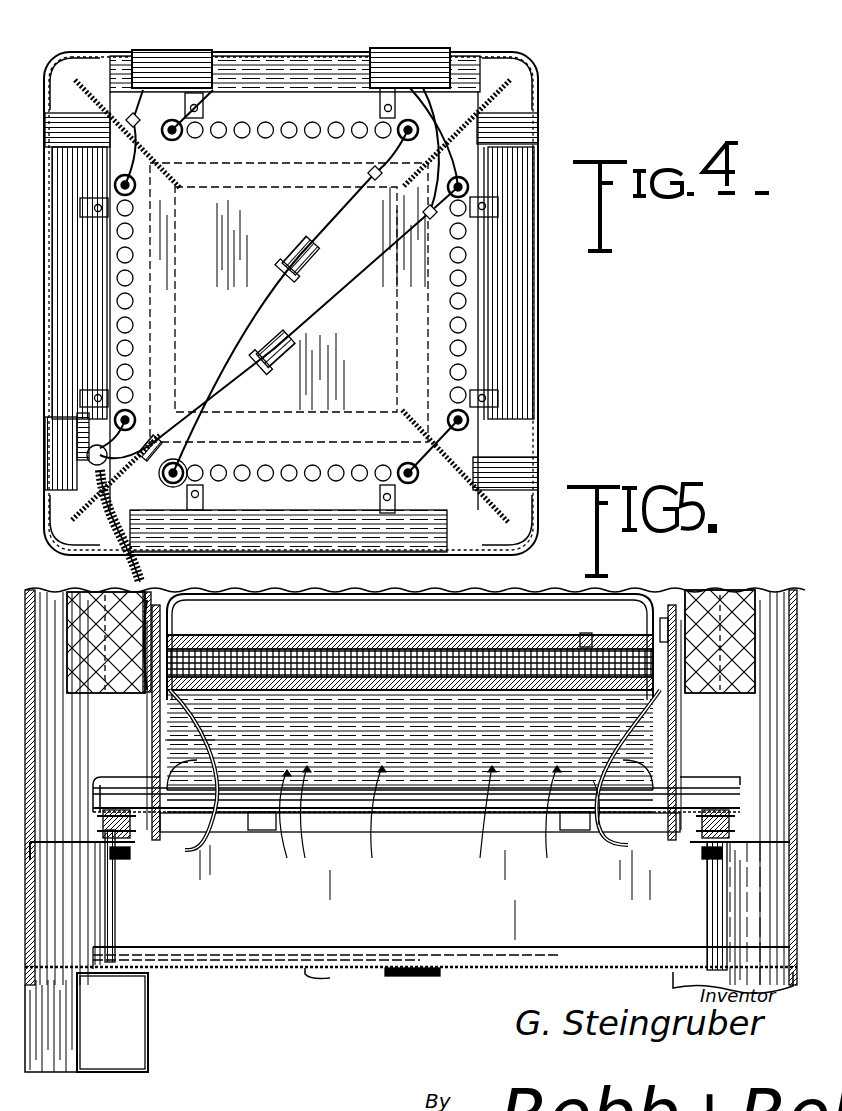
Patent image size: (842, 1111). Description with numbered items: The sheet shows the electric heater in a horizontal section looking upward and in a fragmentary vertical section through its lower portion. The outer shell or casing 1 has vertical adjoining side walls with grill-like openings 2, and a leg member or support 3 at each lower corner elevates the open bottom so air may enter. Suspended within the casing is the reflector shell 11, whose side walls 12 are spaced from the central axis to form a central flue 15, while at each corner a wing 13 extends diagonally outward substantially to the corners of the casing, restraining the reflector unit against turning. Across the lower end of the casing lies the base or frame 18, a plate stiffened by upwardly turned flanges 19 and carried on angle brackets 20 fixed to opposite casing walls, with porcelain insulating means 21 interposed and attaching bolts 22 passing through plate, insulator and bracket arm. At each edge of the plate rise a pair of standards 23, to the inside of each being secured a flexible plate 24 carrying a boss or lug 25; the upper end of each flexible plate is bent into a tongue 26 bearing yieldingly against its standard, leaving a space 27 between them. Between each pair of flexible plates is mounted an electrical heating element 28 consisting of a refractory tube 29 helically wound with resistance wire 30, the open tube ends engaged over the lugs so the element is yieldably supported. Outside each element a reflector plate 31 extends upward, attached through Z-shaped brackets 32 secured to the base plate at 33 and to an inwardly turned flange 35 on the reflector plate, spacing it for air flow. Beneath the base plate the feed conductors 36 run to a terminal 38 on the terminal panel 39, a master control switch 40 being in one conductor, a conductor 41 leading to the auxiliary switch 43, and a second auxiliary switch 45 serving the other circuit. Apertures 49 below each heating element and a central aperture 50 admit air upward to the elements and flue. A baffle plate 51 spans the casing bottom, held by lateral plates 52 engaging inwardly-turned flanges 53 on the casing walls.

In FIG. 4, the outer shell or casing 1 is at (538, 170).
In FIG. 5, the outer shell or casing 1 is at (790, 592).
In FIG. 5, the grill-like openings 2 is at (526, 602).
In FIG. 5, the leg member or support 3 is at (120, 1037).
In FIG. 4, the reflector shell 11 is at (290, 188).
In FIG. 5, the reflector shell 11 is at (683, 600).
In FIG. 4, the side walls 12 is at (289, 290).
In FIG. 4, the wing 13 is at (500, 78).
In FIG. 5, the wing 13 is at (85, 590).
In FIG. 4, the central flue 15 is at (397, 400).
In FIG. 4, the base or frame 18 is at (536, 333).
In FIG. 5, the base or frame 18 is at (712, 800).
In FIG. 4, the upwardly turned flanges 19 is at (310, 126).
In FIG. 5, the upwardly turned flanges 19 is at (100, 787).
In FIG. 4, the angle brackets 20 is at (60, 100).
In FIG. 5, the angle brackets 20 is at (85, 856).
In FIG. 5, the insulating means 21 is at (134, 834).
In FIG. 4, the attaching bolts 22 is at (47, 129).
In FIG. 5, the attaching bolts 22 is at (128, 858).
In FIG. 5, the standards 23 is at (160, 776).
In FIG. 5, the flexible plate 24 is at (165, 640).
In FIG. 5, the boss or lug 25 is at (238, 636).
In FIG. 5, the tongue 26 is at (663, 628).
In FIG. 5, the space 27 is at (153, 705).
In FIG. 5, the electrical heating element 28 is at (360, 637).
In FIG. 5, the refractory tube 29 is at (470, 637).
In FIG. 4, the electrical resistance wire or ribbon 30 is at (175, 114).
In FIG. 5, the electrical resistance wire or ribbon 30 is at (200, 740).
In FIG. 4, the reflector plate 31 is at (286, 70).
In FIG. 5, the reflector plate 31 is at (262, 830).
In FIG. 4, the brackets 32 is at (205, 108).
In FIG. 5, the brackets 32 is at (560, 832).
In FIG. 4, the securing point 33 is at (500, 209).
In FIG. 4, the laterally inwardly turned flange 35 is at (75, 262).
In FIG. 5, the laterally inwardly turned flange 35 is at (352, 832).
In FIG. 4, the feed lines or conductors 36 is at (142, 569).
In FIG. 4, the terminal 38 is at (190, 468).
In FIG. 4, the terminal panel 39 is at (168, 468).
In FIG. 5, the terminal panel 39 is at (585, 637).
In FIG. 4, the control switch 40 is at (60, 474).
In FIG. 4, the conductor 41 is at (253, 326).
In FIG. 4, the auxiliary switch 43 is at (400, 56).
In FIG. 4, the second auxiliary switch 45 is at (175, 52).
In FIG. 4, the apertures 49 is at (252, 138).
In FIG. 5, the apertures 49 is at (410, 792).
In FIG. 4, the aperture 50 is at (303, 273).
In FIG. 5, the baffle plate 51 is at (321, 981).
In FIG. 5, the lateral plates 52 is at (418, 981).
In FIG. 5, the inwardly-turned flanges 53 is at (150, 906).